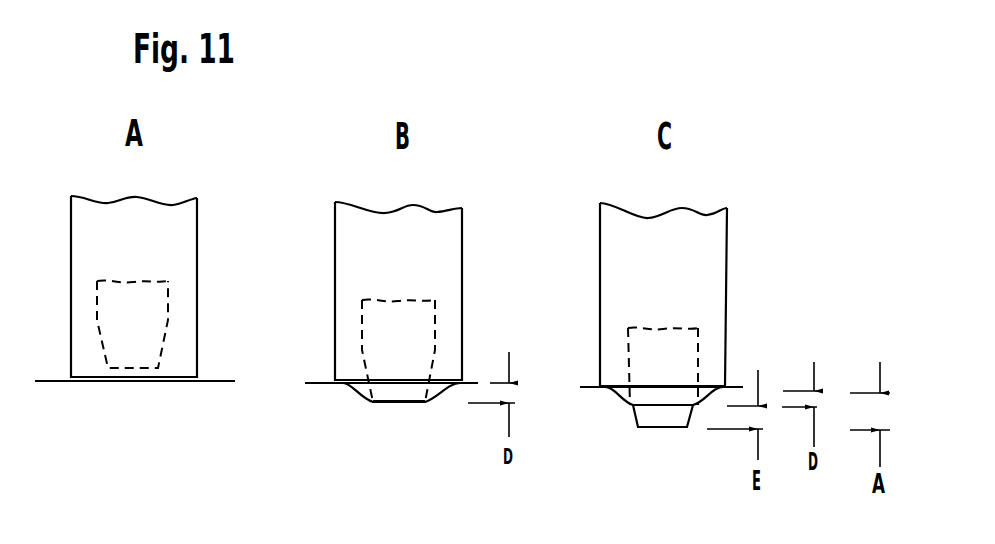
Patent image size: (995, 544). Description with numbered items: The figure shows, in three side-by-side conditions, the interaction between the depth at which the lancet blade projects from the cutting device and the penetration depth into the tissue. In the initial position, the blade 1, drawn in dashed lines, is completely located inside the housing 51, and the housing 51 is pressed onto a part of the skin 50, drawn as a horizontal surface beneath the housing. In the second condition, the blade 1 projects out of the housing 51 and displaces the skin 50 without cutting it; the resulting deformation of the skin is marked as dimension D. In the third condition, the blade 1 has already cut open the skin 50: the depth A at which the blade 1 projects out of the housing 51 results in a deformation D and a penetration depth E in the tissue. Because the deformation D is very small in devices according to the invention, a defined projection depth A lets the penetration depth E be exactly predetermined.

The blade 1 is at (145, 312).
The skin 50 is at (50, 381).
The housing 51 is at (178, 228).